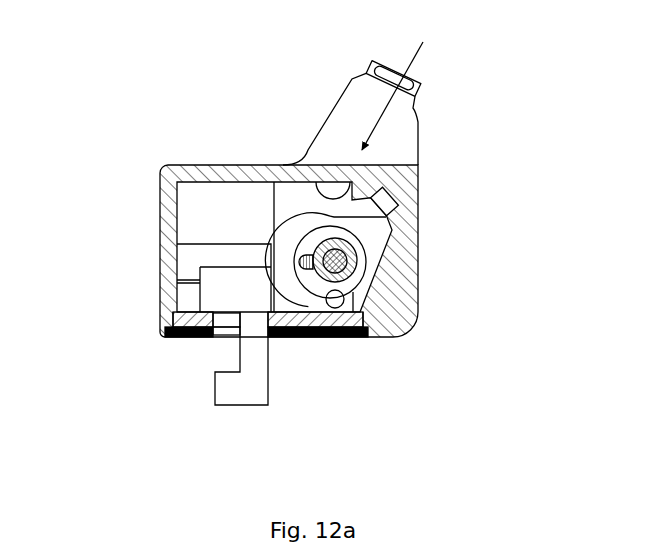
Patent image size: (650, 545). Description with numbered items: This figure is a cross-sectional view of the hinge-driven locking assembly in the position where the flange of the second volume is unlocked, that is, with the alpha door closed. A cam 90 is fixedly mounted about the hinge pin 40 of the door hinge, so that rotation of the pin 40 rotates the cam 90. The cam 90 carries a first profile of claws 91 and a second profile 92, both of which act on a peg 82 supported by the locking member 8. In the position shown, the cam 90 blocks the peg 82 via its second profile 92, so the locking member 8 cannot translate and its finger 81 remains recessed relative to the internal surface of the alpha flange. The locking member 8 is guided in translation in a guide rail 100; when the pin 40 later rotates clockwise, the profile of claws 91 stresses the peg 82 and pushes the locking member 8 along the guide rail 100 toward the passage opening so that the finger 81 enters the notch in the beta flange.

The locking member 8 is at (192, 387).
The hinge pin 40 is at (352, 242).
The finger 81 is at (225, 402).
The peg 82 is at (340, 314).
The cam 90 is at (297, 218).
The profile of claws 91 is at (363, 280).
The second profile 92 is at (312, 314).
The guide rail 100 is at (185, 258).